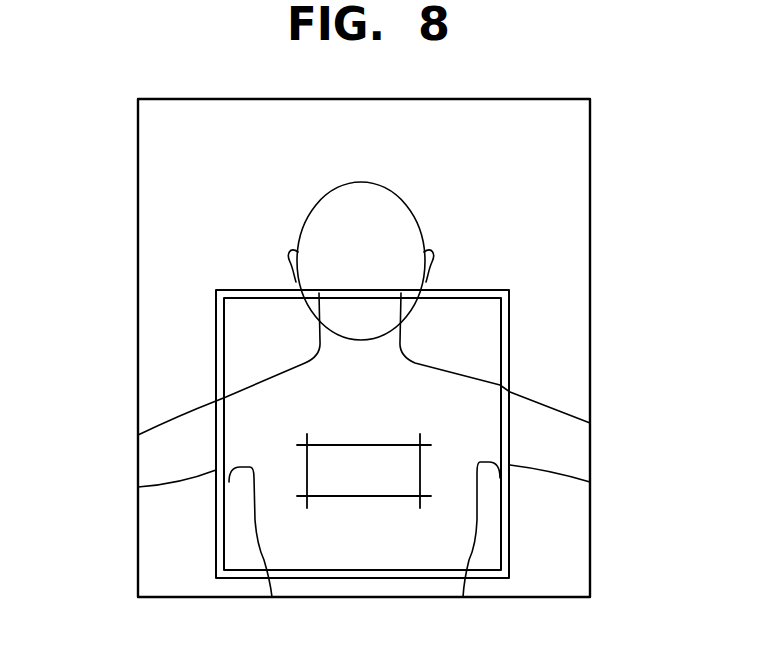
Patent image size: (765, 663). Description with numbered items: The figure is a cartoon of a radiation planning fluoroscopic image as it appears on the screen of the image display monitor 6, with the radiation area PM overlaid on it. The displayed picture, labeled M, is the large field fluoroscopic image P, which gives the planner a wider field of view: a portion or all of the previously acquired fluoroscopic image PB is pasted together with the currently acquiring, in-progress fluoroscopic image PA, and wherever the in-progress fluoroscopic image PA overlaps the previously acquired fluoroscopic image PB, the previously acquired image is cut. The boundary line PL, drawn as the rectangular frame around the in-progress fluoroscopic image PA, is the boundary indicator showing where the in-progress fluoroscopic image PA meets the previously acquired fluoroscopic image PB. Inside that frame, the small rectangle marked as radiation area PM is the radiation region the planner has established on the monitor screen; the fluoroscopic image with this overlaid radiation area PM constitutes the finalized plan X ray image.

The image display monitor 6 is at (592, 548).
The displayed image M is at (473, 160).
The large field fluoroscopic image P is at (128, 250).
The previously acquired fluoroscopic image PB is at (568, 264).
The in-progress fluoroscopic image PA is at (487, 342).
The boundary line PL is at (216, 379).
The radiation area PM is at (366, 489).